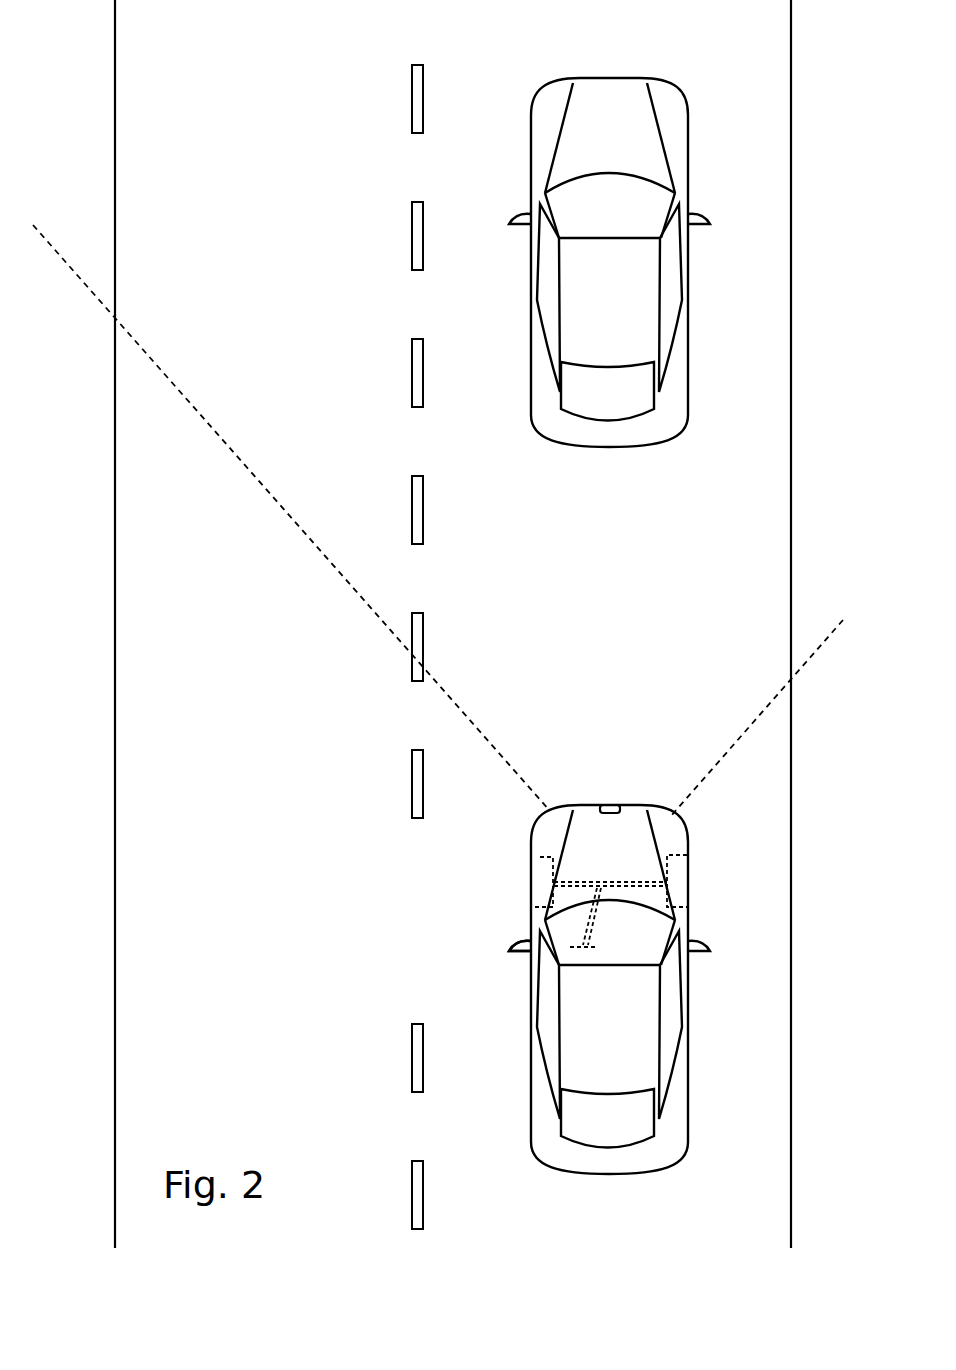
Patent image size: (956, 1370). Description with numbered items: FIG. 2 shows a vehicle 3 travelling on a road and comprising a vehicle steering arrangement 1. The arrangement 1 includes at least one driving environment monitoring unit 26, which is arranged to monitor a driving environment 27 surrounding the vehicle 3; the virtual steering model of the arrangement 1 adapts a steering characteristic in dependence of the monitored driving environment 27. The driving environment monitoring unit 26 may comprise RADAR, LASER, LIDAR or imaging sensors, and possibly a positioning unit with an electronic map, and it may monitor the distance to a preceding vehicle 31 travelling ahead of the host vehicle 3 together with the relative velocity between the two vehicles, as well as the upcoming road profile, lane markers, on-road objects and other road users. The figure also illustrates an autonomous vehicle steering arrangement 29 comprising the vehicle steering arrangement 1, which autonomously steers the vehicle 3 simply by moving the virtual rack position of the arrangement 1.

The vehicle steering arrangement 1 is at (488, 906).
The vehicle 3 is at (665, 1148).
The driving environment monitoring unit 26 is at (615, 804).
The driving environment 27 is at (485, 536).
The autonomous vehicle steering arrangement 29 is at (466, 947).
The preceding vehicle 31 is at (660, 423).